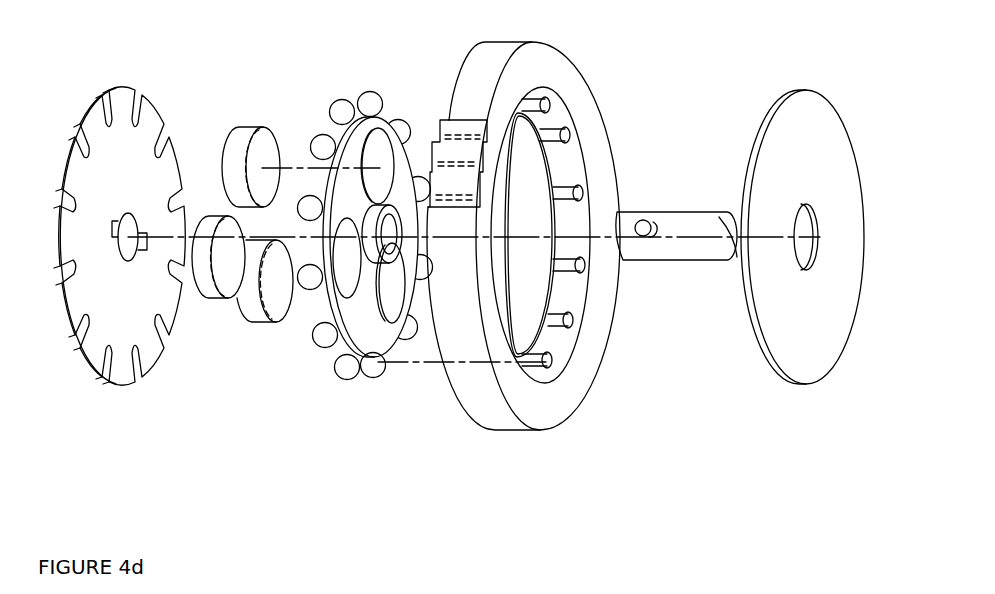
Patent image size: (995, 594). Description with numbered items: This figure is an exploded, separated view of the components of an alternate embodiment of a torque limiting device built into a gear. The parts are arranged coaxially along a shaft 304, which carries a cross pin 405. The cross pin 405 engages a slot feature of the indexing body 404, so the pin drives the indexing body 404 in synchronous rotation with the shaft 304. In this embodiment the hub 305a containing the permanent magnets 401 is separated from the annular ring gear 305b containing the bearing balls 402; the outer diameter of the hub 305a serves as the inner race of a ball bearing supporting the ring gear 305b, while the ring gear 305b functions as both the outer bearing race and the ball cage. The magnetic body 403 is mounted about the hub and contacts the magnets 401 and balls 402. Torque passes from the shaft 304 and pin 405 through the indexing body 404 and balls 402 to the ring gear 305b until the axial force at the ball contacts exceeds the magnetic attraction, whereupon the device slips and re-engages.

The permanent magnets 401 is at (258, 144).
The bearing balls 402 is at (347, 367).
The magnetic body 403 is at (805, 347).
The indexing body 404 is at (122, 322).
The cross pin 405 is at (638, 204).
The shaft 304 is at (691, 205).
The hub 305a is at (375, 328).
The annular ring gear 305b is at (558, 410).